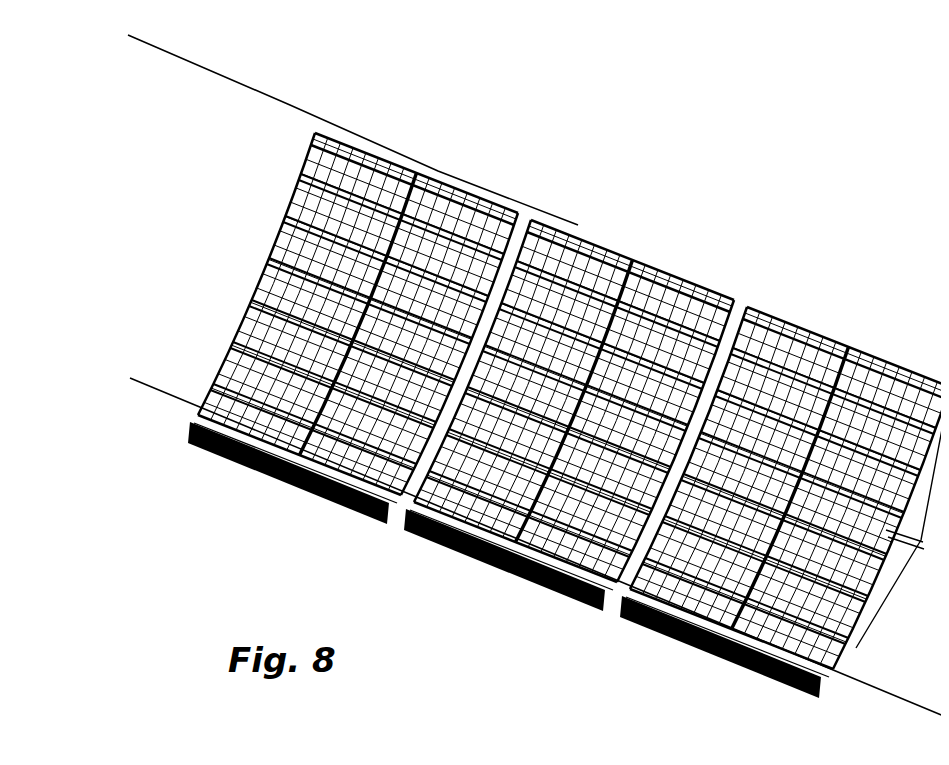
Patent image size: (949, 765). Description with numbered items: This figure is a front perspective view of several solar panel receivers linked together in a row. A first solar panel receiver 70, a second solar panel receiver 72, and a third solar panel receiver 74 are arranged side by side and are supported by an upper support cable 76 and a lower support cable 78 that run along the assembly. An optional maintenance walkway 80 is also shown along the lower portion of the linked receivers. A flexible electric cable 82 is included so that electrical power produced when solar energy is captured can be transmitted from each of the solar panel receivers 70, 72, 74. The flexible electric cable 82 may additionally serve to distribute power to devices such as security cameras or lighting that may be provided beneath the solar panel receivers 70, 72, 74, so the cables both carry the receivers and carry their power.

The first solar panel receiver 70 is at (342, 148).
The second solar panel receiver 72 is at (623, 250).
The third solar panel receiver 74 is at (793, 313).
The upper support cable 76 is at (737, 298).
The lower support cable 78 is at (587, 612).
The maintenance walkway 80 is at (655, 637).
The flexible electric cable 82 is at (390, 524).